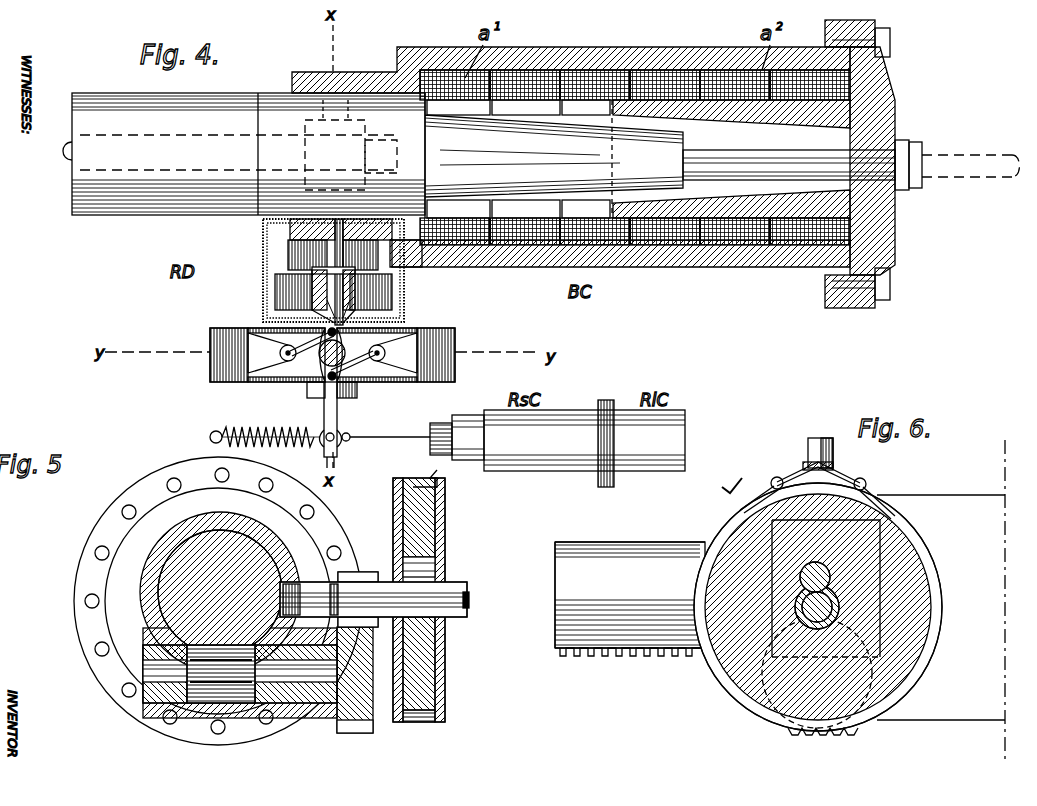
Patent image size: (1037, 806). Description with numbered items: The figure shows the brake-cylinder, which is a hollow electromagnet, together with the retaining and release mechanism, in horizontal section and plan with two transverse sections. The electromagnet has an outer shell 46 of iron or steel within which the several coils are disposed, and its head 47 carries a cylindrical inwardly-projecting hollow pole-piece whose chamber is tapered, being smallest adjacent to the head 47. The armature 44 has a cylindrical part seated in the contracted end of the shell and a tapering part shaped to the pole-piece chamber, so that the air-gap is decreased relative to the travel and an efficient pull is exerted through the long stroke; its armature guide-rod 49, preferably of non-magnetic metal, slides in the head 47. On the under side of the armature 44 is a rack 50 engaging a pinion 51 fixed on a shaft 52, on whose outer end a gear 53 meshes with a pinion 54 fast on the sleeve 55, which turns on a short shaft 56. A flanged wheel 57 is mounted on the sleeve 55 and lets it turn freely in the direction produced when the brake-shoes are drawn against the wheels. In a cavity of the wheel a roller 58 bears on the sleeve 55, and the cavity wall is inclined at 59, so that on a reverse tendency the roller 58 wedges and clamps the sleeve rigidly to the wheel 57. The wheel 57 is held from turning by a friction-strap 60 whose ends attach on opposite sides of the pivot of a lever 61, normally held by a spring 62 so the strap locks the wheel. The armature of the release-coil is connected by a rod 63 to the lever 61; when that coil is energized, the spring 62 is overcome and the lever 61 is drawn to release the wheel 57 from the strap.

In FIG. 4, the armature 44 is at (244, 154).
In FIG. 5, the armature 44 is at (220, 592).
In FIG. 4, the outer shell 46 is at (571, 144).
In FIG. 4, the head 47 is at (895, 125).
In FIG. 4, the armature guide-rod 49 is at (728, 165).
In FIG. 4, the rack 50 is at (155, 163).
In FIG. 5, the rack 50 is at (225, 632).
In FIG. 5, the pinion 51 is at (220, 690).
In FIG. 5, the shaft 52 is at (282, 712).
In FIG. 4, the gear 53 is at (275, 290).
In FIG. 5, the gear 53 is at (355, 733).
In FIG. 4, the pinion 54 is at (290, 310).
In FIG. 5, the pinion 54 is at (352, 575).
In FIG. 5, the sleeve 55 is at (448, 635).
In FIG. 4, the short shaft 56 is at (400, 296).
In FIG. 5, the short shaft 56 is at (374, 599).
In FIG. 5, the flanged wheel 57 is at (440, 531).
In FIG. 5, the roller 58 is at (438, 564).
In FIG. 6, the roller 58 is at (905, 545).
In FIG. 6, the inclined wall 59 is at (795, 575).
In FIG. 4, the friction-strap 60 is at (455, 348).
In FIG. 6, the friction-strap 60 is at (866, 505).
In FIG. 4, the lever 61 is at (340, 413).
In FIG. 6, the lever 61 is at (803, 465).
In FIG. 4, the spring 62 is at (272, 423).
In FIG. 4, the rod 63 is at (392, 436).